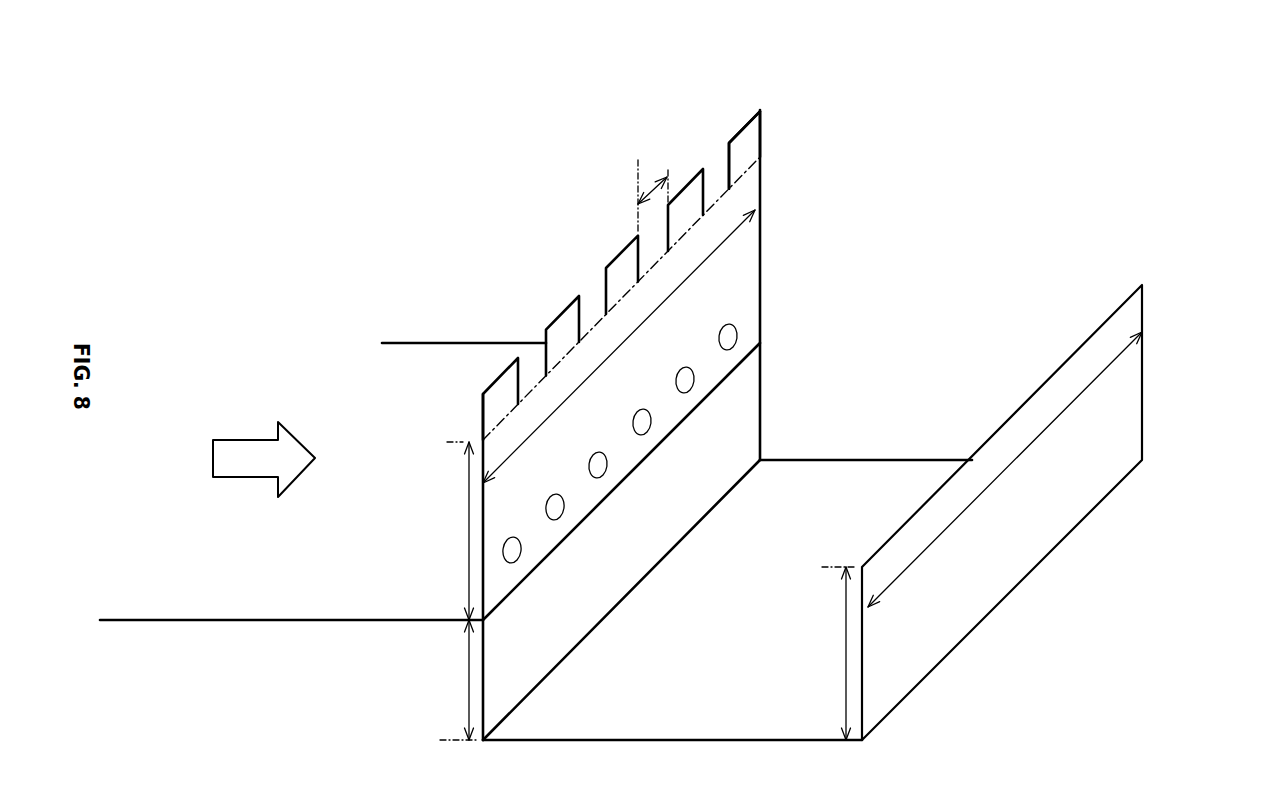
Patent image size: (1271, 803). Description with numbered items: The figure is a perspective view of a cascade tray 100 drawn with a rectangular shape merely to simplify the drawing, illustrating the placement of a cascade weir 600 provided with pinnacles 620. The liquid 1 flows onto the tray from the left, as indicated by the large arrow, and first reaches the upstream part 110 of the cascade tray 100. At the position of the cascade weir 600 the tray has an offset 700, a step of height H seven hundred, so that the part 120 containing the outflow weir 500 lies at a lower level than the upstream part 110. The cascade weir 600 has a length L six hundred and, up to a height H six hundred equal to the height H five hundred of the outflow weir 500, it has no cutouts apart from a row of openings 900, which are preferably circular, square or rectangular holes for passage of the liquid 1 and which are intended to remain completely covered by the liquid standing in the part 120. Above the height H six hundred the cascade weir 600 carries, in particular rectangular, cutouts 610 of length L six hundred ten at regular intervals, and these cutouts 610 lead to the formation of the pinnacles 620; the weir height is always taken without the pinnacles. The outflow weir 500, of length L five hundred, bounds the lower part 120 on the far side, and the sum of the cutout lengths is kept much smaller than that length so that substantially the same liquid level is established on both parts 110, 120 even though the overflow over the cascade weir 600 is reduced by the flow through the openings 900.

The liquid 1 is at (240, 457).
The cascade tray 100 is at (410, 240).
The upstream part of the cascade tray 110 is at (291, 550).
The part containing the outflow weir 120 is at (728, 595).
The outflow weir 500 is at (1142, 320).
The cascade weir 600 is at (762, 253).
The cutouts 610 is at (590, 308).
The pinnacles 620 is at (742, 148).
The offset 700 is at (483, 645).
The openings 900 is at (737, 335).